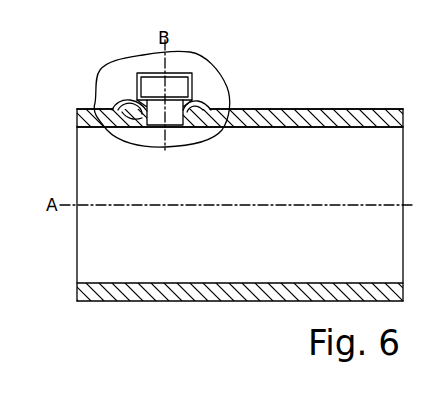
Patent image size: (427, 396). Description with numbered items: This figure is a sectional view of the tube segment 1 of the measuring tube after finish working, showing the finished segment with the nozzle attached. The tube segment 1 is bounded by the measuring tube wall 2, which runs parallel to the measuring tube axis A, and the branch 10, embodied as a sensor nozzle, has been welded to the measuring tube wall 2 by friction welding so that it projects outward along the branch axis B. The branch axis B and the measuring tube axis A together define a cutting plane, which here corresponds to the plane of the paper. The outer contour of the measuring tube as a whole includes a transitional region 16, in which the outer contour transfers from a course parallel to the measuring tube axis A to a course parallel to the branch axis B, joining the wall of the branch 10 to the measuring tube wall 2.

The tube segment 1 is at (387, 107).
The measuring tube wall 2 is at (318, 110).
The branch 10 is at (198, 102).
The transitional region 16 is at (125, 106).